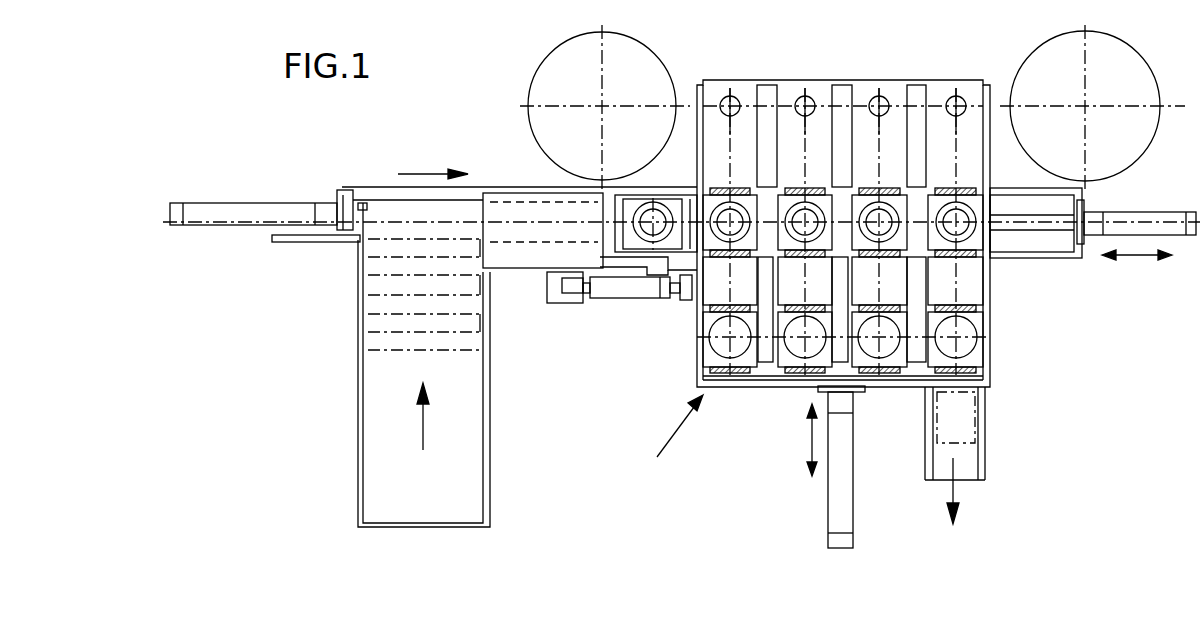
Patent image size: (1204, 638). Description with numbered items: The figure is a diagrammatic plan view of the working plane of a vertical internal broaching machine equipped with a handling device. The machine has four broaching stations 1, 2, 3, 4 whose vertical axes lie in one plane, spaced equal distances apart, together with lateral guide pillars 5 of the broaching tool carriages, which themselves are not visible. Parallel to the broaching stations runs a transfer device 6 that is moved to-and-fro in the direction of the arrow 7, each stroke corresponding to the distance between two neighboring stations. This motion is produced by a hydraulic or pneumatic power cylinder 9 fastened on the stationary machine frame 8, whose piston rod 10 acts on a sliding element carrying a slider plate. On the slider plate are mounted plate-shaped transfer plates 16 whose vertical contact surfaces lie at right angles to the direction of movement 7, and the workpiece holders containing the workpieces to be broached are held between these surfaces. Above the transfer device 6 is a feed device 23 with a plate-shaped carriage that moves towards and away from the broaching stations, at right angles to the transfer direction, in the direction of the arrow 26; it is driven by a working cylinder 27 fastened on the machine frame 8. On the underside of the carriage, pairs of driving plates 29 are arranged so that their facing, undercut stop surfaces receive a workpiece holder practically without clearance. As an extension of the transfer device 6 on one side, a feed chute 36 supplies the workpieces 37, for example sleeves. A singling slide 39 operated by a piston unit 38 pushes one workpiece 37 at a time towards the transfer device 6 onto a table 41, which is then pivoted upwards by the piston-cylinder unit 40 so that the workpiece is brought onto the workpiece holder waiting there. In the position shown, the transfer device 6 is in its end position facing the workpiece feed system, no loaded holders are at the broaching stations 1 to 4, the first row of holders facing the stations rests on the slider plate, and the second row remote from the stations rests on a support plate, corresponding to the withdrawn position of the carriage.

The broaching station 1 is at (724, 97).
The broaching station 2 is at (799, 97).
The broaching station 3 is at (885, 97).
The broaching station 4 is at (962, 97).
The lateral guide pillar 5 is at (538, 70).
The transfer device 6 is at (1000, 232).
The direction of movement arrow 7 is at (1140, 262).
The machine frame 8 is at (990, 327).
The power cylinder 9 is at (1178, 232).
The piston rod 10 is at (1045, 222).
The transfer plate 16 is at (917, 233).
The feed device 23 is at (668, 441).
The direction of movement arrow 26 is at (812, 441).
The working cylinder 27 is at (838, 493).
The driving plate 29 is at (815, 187).
The feed chute 36 is at (357, 432).
The workpiece 37 is at (380, 338).
The piston unit 38 is at (203, 220).
The singling slide 39 is at (298, 243).
The piston-cylinder unit 40 is at (636, 290).
The table 41 is at (527, 268).